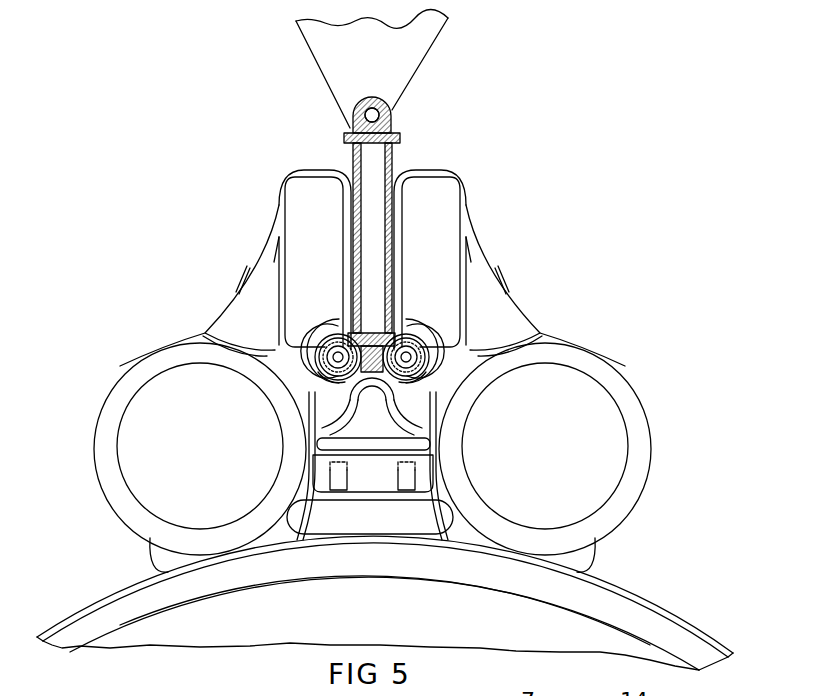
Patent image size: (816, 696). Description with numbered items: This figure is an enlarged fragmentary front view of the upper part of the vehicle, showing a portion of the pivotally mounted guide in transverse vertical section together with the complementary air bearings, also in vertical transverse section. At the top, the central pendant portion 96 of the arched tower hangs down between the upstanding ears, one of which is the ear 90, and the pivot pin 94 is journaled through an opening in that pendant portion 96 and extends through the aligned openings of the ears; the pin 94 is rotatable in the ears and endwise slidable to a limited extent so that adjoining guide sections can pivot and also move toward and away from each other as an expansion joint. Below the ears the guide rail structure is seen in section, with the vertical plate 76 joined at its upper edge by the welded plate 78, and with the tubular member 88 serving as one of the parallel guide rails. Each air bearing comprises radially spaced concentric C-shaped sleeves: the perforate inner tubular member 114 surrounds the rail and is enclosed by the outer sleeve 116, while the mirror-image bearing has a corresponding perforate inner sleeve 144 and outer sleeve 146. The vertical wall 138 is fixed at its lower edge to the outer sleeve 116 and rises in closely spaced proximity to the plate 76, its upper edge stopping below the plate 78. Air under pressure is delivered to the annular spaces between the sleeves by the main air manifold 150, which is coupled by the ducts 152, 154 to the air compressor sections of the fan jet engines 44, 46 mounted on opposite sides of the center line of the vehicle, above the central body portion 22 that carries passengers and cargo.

The central body portion 22 is at (640, 592).
The fan jet engine 44 is at (615, 363).
The fan jet engine 46 is at (130, 362).
The vertical plate 76 is at (392, 158).
The plate 78 is at (343, 133).
The tubular member 88 is at (320, 326).
The upstanding ear 90 is at (348, 118).
The pivot pin 94 is at (392, 112).
The central pendant portion 96 is at (433, 50).
The inner tubular member 114 is at (425, 383).
The outer sleeve 116 is at (418, 368).
The vertical wall 138 is at (400, 210).
The perforate inner sleeve 144 is at (312, 399).
The outer sleeve 146 is at (318, 383).
The main air manifold 150 is at (405, 432).
The duct 152 is at (430, 425).
The duct 154 is at (323, 430).